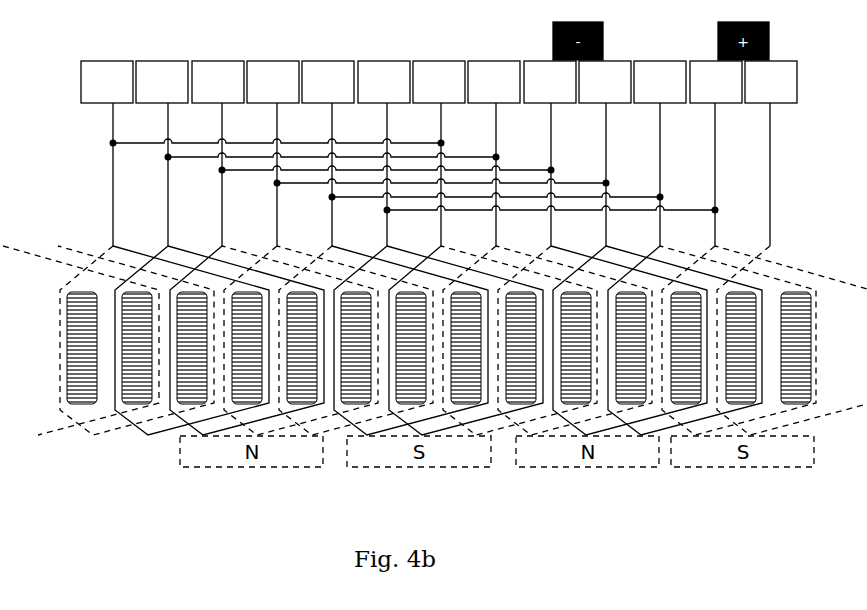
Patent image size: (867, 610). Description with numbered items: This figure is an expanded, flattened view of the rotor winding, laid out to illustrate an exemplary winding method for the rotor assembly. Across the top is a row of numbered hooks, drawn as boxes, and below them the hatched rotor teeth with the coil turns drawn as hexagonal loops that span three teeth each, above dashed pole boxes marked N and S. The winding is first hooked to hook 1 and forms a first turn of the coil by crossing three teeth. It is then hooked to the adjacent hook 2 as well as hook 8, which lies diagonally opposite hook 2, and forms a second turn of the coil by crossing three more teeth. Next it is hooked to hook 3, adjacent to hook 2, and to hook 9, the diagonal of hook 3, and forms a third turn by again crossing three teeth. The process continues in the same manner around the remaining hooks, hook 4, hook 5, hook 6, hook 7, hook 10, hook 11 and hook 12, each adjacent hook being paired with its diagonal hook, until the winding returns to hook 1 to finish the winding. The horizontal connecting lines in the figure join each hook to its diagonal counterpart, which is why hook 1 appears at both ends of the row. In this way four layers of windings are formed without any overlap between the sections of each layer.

The hook 1 is at (439, 82).
The hook 2 is at (716, 82).
The hook 3 is at (660, 82).
The hook 4 is at (605, 82).
The hook 5 is at (550, 82).
The hook 6 is at (494, 82).
The hook 7 is at (439, 82).
The hook 8 is at (384, 82).
The hook 9 is at (328, 82).
The hook 10 is at (273, 82).
The hook 11 is at (218, 82).
The hook 12 is at (162, 82).